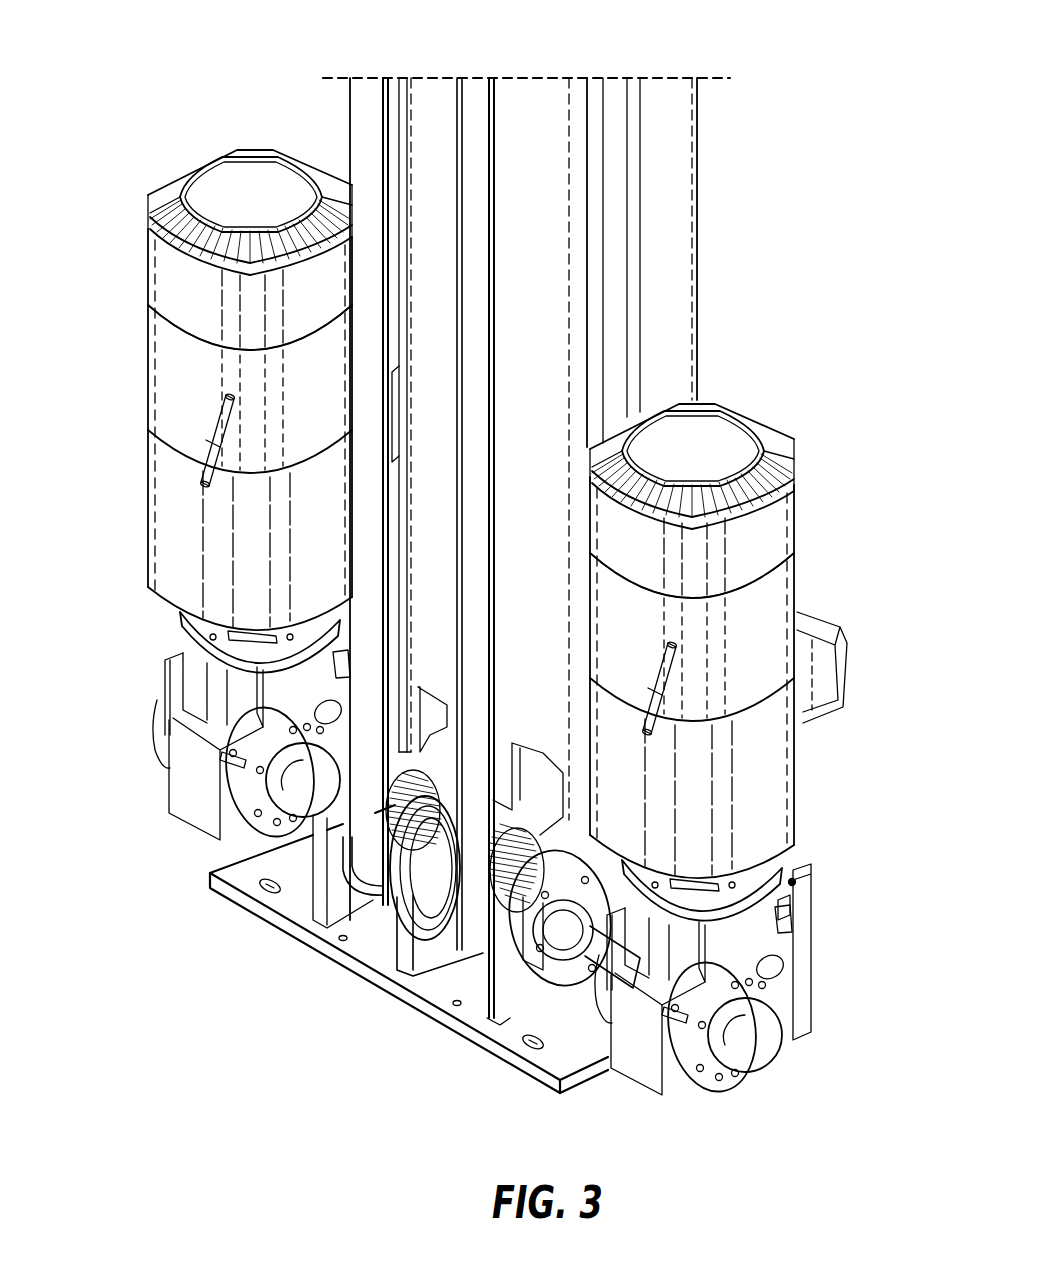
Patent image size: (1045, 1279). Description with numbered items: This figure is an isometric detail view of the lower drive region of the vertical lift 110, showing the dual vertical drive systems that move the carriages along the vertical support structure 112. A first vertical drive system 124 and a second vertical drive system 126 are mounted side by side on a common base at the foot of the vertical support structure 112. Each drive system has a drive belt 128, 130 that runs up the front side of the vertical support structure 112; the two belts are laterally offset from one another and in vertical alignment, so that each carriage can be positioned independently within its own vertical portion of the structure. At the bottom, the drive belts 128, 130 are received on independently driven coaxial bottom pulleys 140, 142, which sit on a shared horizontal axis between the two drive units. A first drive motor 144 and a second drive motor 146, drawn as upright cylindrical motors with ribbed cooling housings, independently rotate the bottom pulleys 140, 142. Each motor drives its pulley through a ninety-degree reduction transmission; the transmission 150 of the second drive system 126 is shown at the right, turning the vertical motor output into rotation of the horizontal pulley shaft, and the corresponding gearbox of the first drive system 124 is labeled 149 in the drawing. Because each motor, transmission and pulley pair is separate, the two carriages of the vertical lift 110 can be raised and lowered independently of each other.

The vertical lift 110 is at (436, 60).
The vertical support structure 112 is at (697, 238).
The first vertical drive system 124 is at (201, 379).
The second vertical drive system 126 is at (776, 763).
The drive belt 128 is at (368, 122).
The drive belt 130 is at (478, 97).
The bottom pulley 140 is at (417, 798).
The bottom pulley 142 is at (522, 847).
The first drive motor 144 is at (222, 282).
The second drive motor 146 is at (752, 550).
The first gearbox 149 is at (247, 782).
The 90° reduction transmission 150 is at (740, 1017).